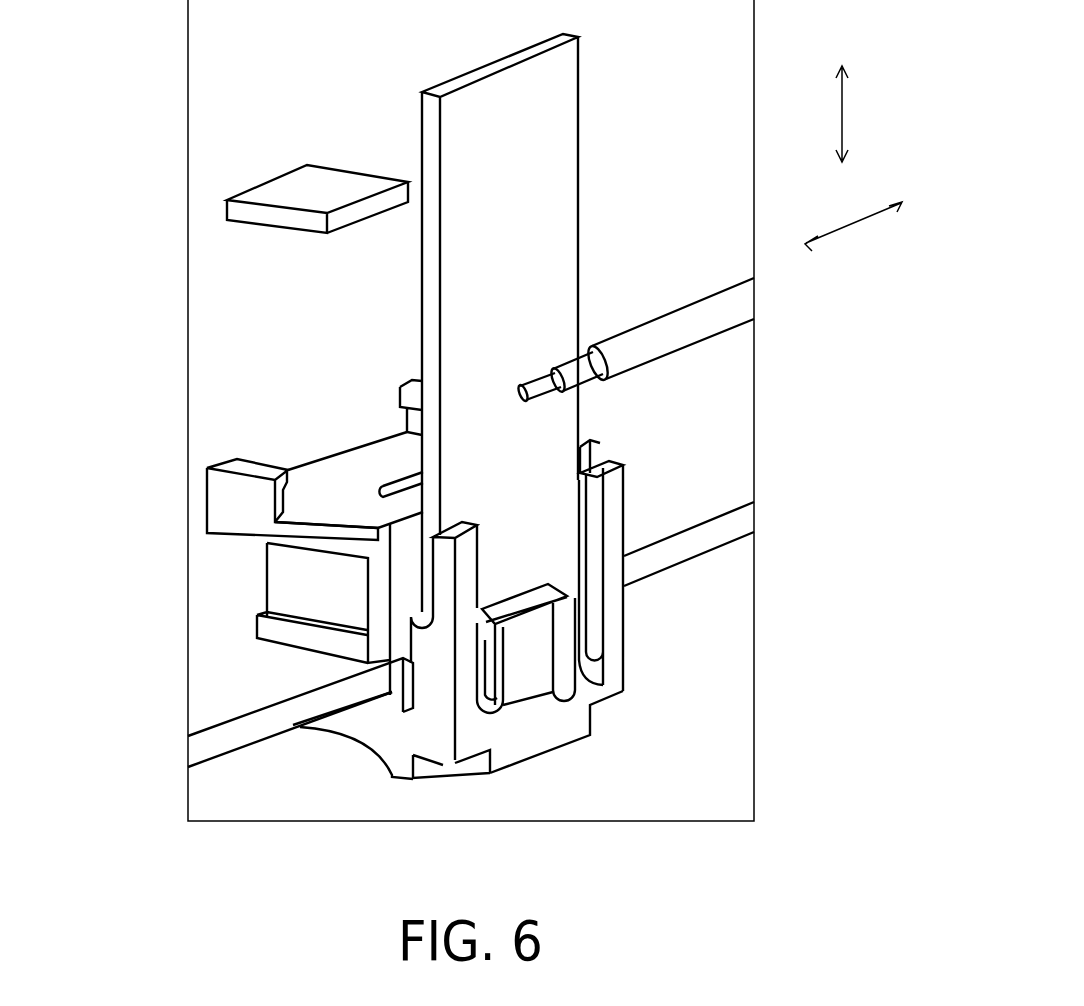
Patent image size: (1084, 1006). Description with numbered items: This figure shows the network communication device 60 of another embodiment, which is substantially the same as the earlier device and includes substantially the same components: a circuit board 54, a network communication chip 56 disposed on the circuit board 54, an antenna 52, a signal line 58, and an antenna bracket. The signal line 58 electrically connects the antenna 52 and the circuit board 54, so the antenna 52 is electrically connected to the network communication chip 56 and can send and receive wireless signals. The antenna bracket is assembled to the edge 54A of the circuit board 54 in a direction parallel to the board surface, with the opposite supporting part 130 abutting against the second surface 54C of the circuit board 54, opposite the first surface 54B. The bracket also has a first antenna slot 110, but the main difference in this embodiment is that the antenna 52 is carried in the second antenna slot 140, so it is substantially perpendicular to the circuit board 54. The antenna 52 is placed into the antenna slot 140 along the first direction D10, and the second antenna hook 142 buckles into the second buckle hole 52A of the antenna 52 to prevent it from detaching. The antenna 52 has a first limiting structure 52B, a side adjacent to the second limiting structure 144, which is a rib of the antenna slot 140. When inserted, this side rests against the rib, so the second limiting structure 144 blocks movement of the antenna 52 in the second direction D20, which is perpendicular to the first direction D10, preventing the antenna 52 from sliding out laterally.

The network communication device 60 is at (106, 337).
The antenna 52 is at (483, 347).
The second buckle hole 52A is at (607, 540).
The first limiting structure 52B is at (420, 588).
The circuit board 54 is at (477, 618).
The edge of the circuit board 54A is at (738, 528).
The first surface 54B is at (236, 660).
The second surface 54C is at (238, 718).
The network communication chip 56 is at (323, 182).
The signal line 58 is at (728, 317).
The first antenna slot 110 is at (370, 633).
The opposite supporting part 130 is at (347, 715).
The second antenna slot 140 is at (616, 444).
The second antenna hook 142 is at (527, 638).
The second limiting structure 144 is at (427, 650).
The first direction D10 is at (846, 110).
The second direction D20 is at (850, 226).